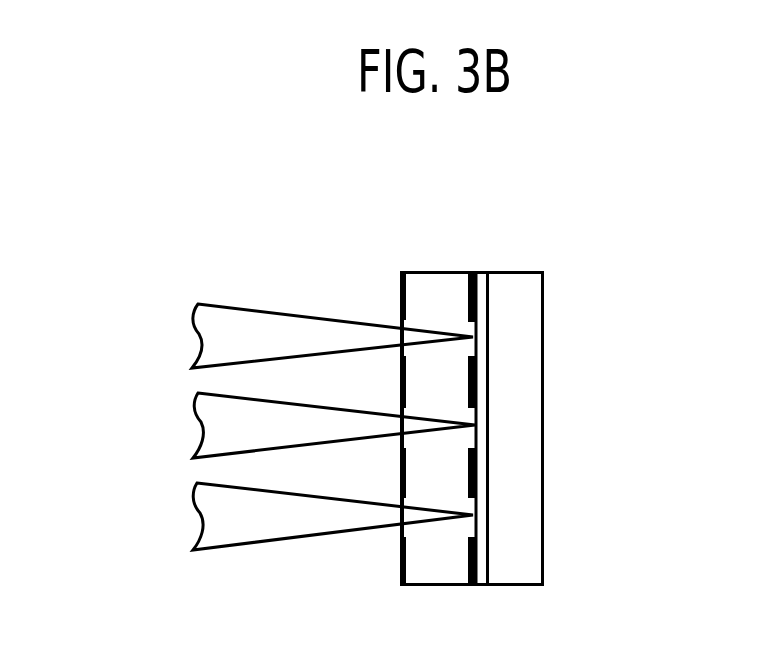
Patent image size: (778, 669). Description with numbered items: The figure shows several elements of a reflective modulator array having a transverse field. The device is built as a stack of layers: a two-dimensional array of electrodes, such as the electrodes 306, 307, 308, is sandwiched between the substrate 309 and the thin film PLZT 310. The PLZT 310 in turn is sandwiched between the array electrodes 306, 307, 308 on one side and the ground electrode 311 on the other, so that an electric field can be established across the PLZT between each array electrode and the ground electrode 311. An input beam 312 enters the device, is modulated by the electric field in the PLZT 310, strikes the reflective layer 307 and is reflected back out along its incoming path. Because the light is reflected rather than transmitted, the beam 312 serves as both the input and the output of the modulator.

The electrode 306 is at (488, 375).
The electrode / reflective layer 307 is at (492, 464).
The electrode 308 is at (490, 489).
The substrate 309 is at (555, 411).
The thin film PLZT 310 is at (434, 262).
The ground electrode 311 is at (388, 386).
The beam 312 is at (213, 515).